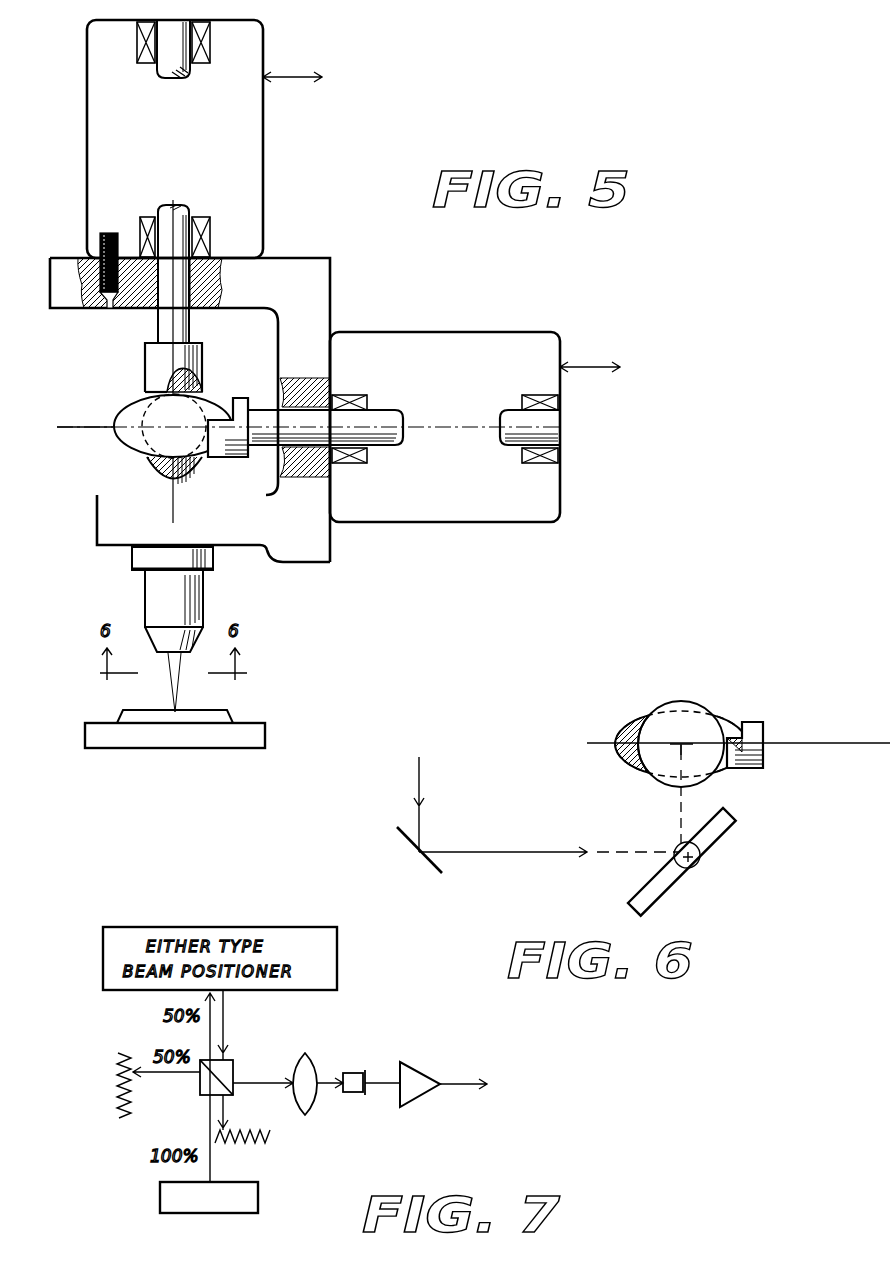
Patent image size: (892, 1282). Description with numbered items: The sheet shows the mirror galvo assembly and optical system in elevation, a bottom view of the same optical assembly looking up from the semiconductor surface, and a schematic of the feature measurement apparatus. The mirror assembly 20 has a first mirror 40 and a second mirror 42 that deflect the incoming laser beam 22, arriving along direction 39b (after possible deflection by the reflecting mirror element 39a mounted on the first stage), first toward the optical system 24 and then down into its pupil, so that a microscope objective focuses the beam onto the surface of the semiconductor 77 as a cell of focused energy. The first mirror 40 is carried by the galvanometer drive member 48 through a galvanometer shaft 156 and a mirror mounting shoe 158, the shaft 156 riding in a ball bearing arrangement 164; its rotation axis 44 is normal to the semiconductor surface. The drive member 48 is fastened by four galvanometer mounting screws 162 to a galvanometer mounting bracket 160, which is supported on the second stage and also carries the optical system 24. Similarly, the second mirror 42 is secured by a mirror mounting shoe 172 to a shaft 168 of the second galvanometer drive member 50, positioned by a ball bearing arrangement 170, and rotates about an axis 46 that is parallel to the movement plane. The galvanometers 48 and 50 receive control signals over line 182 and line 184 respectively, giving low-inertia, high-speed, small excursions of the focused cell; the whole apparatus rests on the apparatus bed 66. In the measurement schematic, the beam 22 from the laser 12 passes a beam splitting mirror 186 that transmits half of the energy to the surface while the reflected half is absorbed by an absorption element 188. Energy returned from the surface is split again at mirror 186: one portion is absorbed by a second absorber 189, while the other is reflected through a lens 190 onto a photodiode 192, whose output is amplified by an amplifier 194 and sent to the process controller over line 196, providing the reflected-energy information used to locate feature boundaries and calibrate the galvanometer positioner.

In FIG. 7, the laser 12 is at (258, 1198).
In FIG. 5, the mirror assembly 20 is at (147, 431).
In FIG. 6, the laser beam 22 is at (420, 783).
In FIG. 5, the optical system 24 is at (138, 600).
In FIG. 6, the optical system 24 is at (708, 700).
In FIG. 6, the reflecting mirror element 39a is at (415, 855).
In FIG. 5, the direction 39b is at (70, 426).
In FIG. 6, the direction 39b is at (502, 850).
In FIG. 5, the first mirror 40 is at (192, 367).
In FIG. 6, the first mirror 40 is at (655, 907).
In FIG. 5, the second mirror 42 is at (120, 443).
In FIG. 6, the second mirror 42 is at (622, 765).
In FIG. 5, the rotation axis 44 is at (173, 505).
In FIG. 6, the rotation axis 44 is at (703, 852).
In FIG. 5, the rotation axis 46 is at (405, 430).
In FIG. 6, the rotation axis 46 is at (787, 745).
In FIG. 5, the galvanometer drive member 48 is at (264, 160).
In FIG. 5, the galvanometer drive member 50 is at (442, 332).
In FIG. 5, the apparatus bed 66 is at (248, 726).
In FIG. 5, the semiconductor 77 is at (213, 712).
In FIG. 5, the galvanometer shaft 156 is at (158, 325).
In FIG. 5, the mirror mounting shoe 158 is at (137, 362).
In FIG. 6, the mirror mounting shoe 158 is at (692, 866).
In FIG. 5, the galvanometer mounting bracket 160 is at (307, 286).
In FIG. 5, the galvanometer mounting screws 162 is at (100, 240).
In FIG. 5, the ball bearing arrangement 164 is at (148, 66).
In FIG. 5, the shaft 168 is at (268, 414).
In FIG. 5, the ball bearing arrangement 170 is at (352, 395).
In FIG. 5, the mirror mounting shoe 172 is at (220, 462).
In FIG. 6, the mirror mounting shoe 172 is at (745, 723).
In FIG. 5, the line 182 is at (283, 77).
In FIG. 5, the line 184 is at (585, 367).
In FIG. 7, the beam splitting mirror 186 is at (234, 1064).
In FIG. 7, the absorption element 188 is at (115, 1072).
In FIG. 7, the second absorber 189 is at (237, 1142).
In FIG. 7, the lens 190 is at (308, 1105).
In FIG. 7, the photodiode 192 is at (353, 1074).
In FIG. 7, the amplifier 194 is at (425, 1068).
In FIG. 7, the line 196 is at (456, 1087).